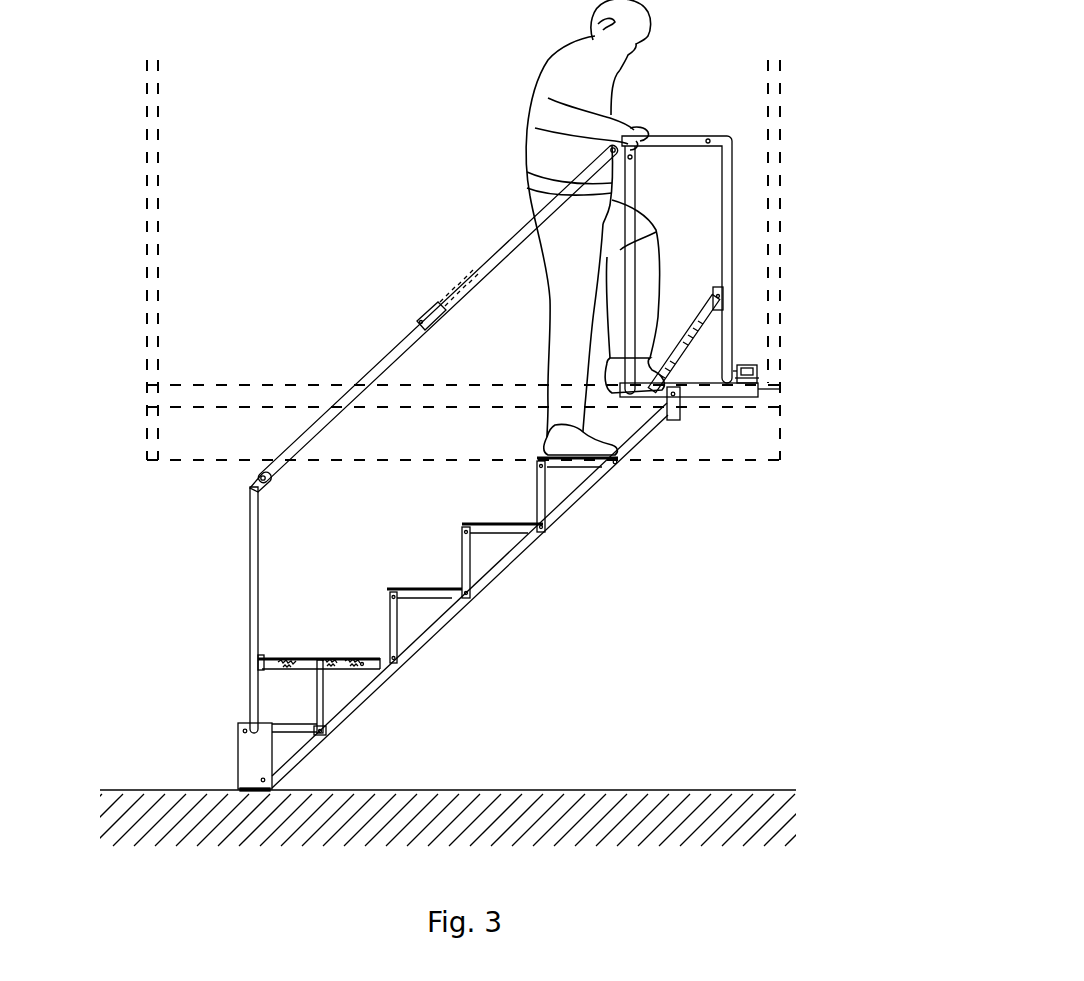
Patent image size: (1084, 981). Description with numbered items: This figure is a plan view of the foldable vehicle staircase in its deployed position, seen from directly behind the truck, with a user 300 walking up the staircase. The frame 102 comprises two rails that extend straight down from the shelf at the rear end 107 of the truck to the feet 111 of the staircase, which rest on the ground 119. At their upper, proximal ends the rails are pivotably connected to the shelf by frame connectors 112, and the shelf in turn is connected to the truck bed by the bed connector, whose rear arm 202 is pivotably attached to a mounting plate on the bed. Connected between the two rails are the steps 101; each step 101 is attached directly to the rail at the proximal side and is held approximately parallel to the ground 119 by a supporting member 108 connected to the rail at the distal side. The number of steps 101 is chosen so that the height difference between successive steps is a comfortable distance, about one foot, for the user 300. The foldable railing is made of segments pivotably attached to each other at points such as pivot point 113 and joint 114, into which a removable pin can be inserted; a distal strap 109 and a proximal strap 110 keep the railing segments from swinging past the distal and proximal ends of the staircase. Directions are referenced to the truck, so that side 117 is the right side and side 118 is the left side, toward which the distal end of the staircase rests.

The user 300 is at (482, 50).
The step 101 is at (497, 522).
The frame 102 is at (428, 630).
The rear end of the truck 107 is at (243, 395).
The supporting member 108 is at (468, 552).
The distal strap 109 is at (292, 655).
The proximal strap 110 is at (702, 333).
The foot 111 is at (252, 752).
The frame connector 112 is at (676, 408).
The pivot point 113 is at (266, 488).
The joint 114 is at (425, 307).
The right side 117 is at (782, 245).
The left side 118 is at (147, 210).
The ground 119 is at (612, 790).
The rear arm 202 is at (750, 363).